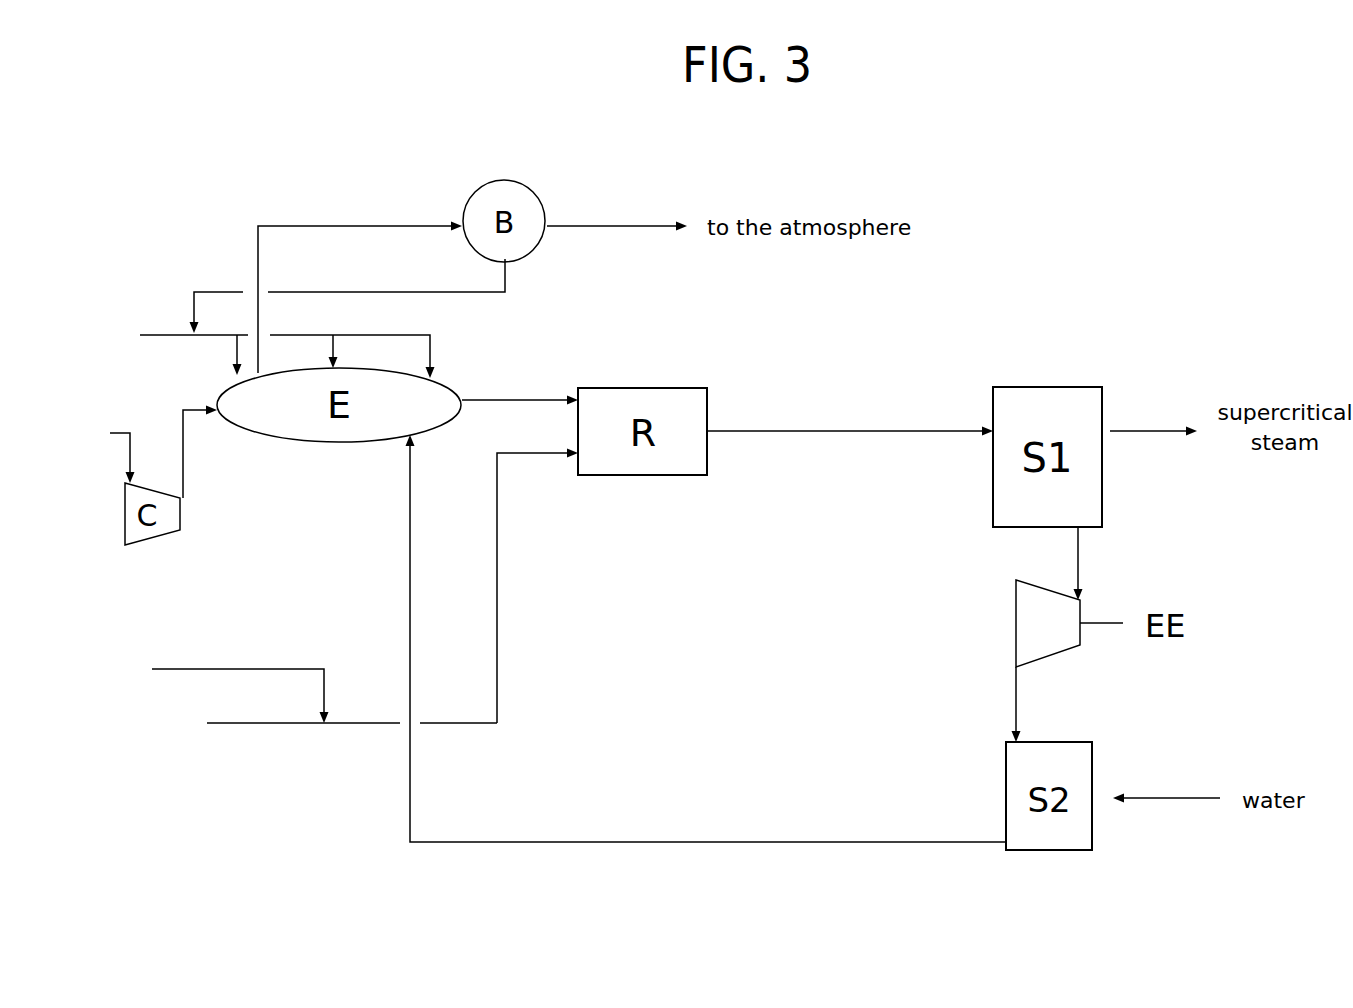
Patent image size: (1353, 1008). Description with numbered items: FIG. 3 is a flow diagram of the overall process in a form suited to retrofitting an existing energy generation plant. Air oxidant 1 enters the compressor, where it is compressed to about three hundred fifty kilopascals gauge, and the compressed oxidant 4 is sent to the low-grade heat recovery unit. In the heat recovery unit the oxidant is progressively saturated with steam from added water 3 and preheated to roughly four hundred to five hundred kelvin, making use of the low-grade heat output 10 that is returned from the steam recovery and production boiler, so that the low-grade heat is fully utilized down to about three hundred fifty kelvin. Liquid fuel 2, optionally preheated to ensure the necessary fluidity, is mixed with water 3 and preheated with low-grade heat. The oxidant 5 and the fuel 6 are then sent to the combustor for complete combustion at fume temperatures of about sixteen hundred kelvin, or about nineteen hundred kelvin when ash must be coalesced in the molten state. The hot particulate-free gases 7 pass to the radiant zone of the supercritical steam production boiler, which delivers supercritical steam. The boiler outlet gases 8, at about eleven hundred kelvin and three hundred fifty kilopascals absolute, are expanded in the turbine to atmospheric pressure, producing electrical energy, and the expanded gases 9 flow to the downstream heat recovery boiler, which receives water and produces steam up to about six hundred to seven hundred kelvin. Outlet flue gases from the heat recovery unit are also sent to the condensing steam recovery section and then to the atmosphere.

The air oxidant 1 is at (111, 443).
The liquid fuel 2 is at (312, 736).
The water 3 is at (251, 525).
The compressed oxidant stream 4 is at (203, 452).
The oxidant stream to combustor 5 is at (520, 388).
The fuel stream to combustor 6 is at (537, 586).
The hot gas stream 7 is at (850, 419).
The boiler outlet gas stream 8 is at (1093, 563).
The turbine exhaust stream 9 is at (1004, 704).
The low-grade heat output 10 is at (706, 638).